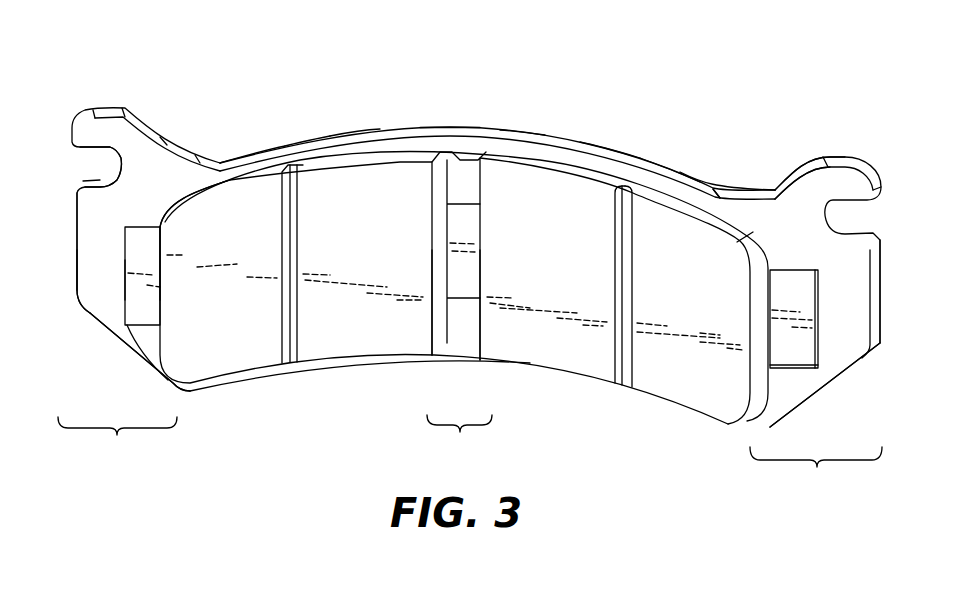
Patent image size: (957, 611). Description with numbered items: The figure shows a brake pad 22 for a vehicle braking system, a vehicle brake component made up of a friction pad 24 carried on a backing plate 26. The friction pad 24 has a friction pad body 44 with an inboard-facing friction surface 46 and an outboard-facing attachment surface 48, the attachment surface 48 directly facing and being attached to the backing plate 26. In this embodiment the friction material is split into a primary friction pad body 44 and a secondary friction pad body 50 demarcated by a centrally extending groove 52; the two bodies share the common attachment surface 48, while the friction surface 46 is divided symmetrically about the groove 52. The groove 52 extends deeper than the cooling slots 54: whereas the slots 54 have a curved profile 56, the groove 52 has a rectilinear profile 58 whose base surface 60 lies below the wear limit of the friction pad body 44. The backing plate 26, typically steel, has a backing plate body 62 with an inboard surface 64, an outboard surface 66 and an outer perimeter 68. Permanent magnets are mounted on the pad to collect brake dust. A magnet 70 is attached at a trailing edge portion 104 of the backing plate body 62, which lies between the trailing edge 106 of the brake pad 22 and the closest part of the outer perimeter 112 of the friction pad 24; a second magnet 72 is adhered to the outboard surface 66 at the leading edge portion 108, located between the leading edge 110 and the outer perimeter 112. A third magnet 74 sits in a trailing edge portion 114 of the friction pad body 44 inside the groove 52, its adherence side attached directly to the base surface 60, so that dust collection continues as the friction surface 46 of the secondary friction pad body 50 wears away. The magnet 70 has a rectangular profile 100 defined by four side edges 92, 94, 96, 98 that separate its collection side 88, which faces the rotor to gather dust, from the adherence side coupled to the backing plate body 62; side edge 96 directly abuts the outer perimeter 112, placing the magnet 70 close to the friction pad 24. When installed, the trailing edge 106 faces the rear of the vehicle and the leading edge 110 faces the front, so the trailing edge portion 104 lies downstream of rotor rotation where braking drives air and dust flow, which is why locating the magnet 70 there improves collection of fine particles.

The brake pad 22 is at (730, 87).
The friction pad 24 is at (558, 198).
The backing plate 26 is at (663, 183).
The friction pad body 44 is at (230, 208).
The inboard-facing friction surface 46 is at (317, 183).
The outboard-facing attachment surface 48 is at (352, 151).
The secondary friction pad body 50 is at (528, 188).
The centrally extending groove 52 is at (453, 164).
The slots 54 is at (285, 362).
The curved profile 56 is at (293, 362).
The rectilinear profile 58 is at (443, 344).
The base surface 60 is at (468, 341).
The backing plate body 62 is at (713, 202).
The inboard surface 64 is at (757, 216).
The outboard surface 66 is at (777, 194).
The outer perimeter 68 is at (872, 282).
The magnet 70 is at (145, 238).
The second magnet 72 is at (797, 284).
The magnet 74 is at (463, 217).
The collection side 88 is at (130, 256).
The side edge 92 is at (128, 276).
The side edge 94 is at (130, 224).
The side edge 96 is at (162, 245).
The side edge 98 is at (143, 324).
The rectangular profile 100 is at (123, 315).
The trailing edge portion 104 is at (139, 290).
The trailing edge 106 is at (75, 275).
The leading edge portion 108 is at (816, 329).
The leading edge 110 is at (883, 313).
The outer perimeter 112 is at (602, 182).
The trailing edge portion 114 is at (459, 308).